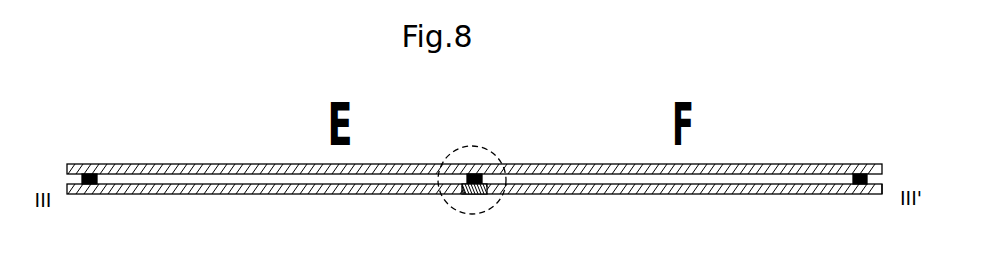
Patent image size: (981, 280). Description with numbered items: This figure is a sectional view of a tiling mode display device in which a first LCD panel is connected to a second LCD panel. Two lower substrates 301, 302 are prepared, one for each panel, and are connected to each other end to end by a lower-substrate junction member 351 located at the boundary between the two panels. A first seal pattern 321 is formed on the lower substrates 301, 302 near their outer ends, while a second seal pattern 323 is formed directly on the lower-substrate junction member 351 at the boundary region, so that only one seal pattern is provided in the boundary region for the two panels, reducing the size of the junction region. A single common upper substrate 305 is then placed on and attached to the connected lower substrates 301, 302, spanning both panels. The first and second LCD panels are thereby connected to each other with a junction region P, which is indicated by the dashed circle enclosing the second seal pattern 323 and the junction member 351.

The upper substrate 305 is at (272, 164).
The lower substrate 301 is at (248, 194).
The lower substrate 302 is at (870, 195).
The first seal pattern 321 is at (83, 188).
The second seal pattern 323 is at (463, 181).
The lower-substrate junction member 351 is at (473, 195).
The junction region P is at (495, 153).